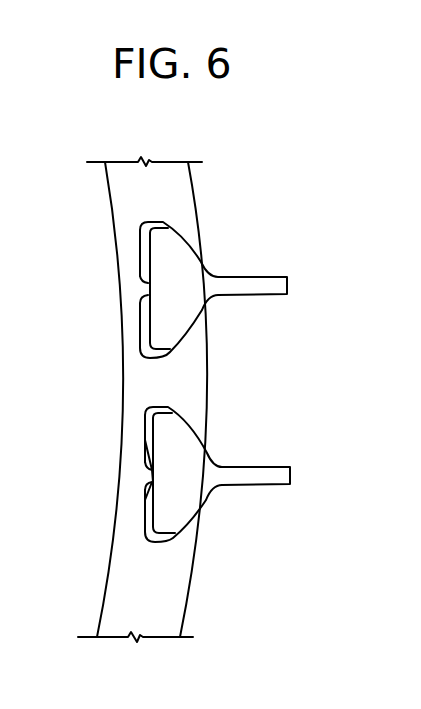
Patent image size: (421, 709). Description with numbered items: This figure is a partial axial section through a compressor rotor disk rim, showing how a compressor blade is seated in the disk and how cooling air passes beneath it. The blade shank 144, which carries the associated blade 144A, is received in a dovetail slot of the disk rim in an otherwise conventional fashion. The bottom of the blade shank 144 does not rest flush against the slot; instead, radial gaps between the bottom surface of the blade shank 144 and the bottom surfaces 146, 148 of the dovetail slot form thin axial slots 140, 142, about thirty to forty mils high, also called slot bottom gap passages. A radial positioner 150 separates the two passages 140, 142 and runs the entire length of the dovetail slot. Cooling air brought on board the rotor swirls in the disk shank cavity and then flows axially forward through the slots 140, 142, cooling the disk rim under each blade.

The axial slot 140 is at (146, 529).
The axial slot 142 is at (152, 411).
The blade shank 144 is at (165, 475).
The blade 144A is at (257, 467).
The bottom surface of disk dovetail slot 146 is at (146, 494).
The bottom surface of disk dovetail slot 148 is at (146, 438).
The radial positioner 150 is at (148, 482).